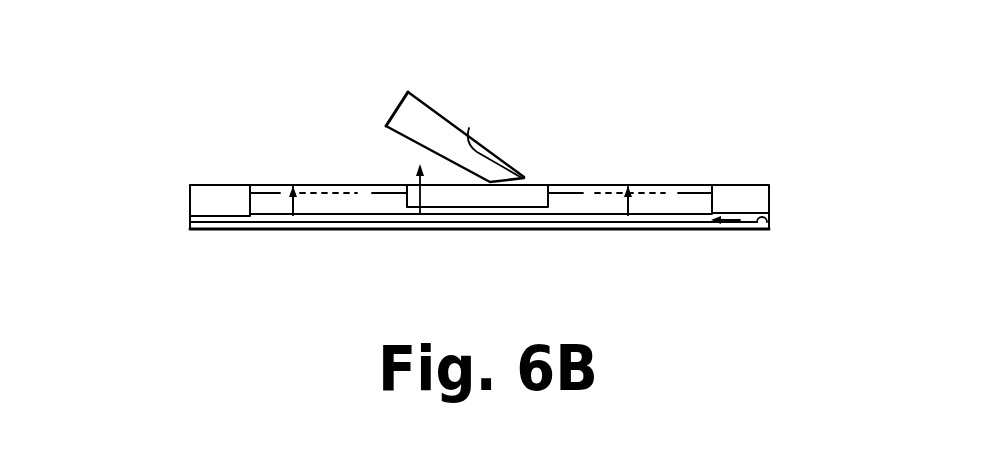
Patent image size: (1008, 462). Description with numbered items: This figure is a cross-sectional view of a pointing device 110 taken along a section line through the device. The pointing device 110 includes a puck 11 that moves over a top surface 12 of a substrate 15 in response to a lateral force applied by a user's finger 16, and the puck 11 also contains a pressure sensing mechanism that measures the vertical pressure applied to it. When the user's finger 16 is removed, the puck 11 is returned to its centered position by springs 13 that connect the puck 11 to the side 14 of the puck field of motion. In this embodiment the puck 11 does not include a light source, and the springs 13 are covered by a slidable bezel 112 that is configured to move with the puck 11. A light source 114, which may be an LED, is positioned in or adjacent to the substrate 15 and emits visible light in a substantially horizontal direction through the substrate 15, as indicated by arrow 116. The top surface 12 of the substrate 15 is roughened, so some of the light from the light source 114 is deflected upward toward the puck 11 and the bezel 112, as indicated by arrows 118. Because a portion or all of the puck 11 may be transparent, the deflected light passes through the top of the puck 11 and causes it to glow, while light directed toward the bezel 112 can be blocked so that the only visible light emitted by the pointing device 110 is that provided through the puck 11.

The pointing device 110 is at (142, 131).
The puck 11 is at (472, 197).
The top surface 12 is at (350, 215).
The springs 13 is at (565, 184).
The side of the puck field of motion 14 is at (750, 182).
The substrate 15 is at (498, 228).
The user's finger 16 is at (445, 117).
The slidable bezel 112 is at (280, 184).
The light source 114 is at (767, 226).
The arrow 116 is at (735, 222).
The arrows 118 is at (253, 245).